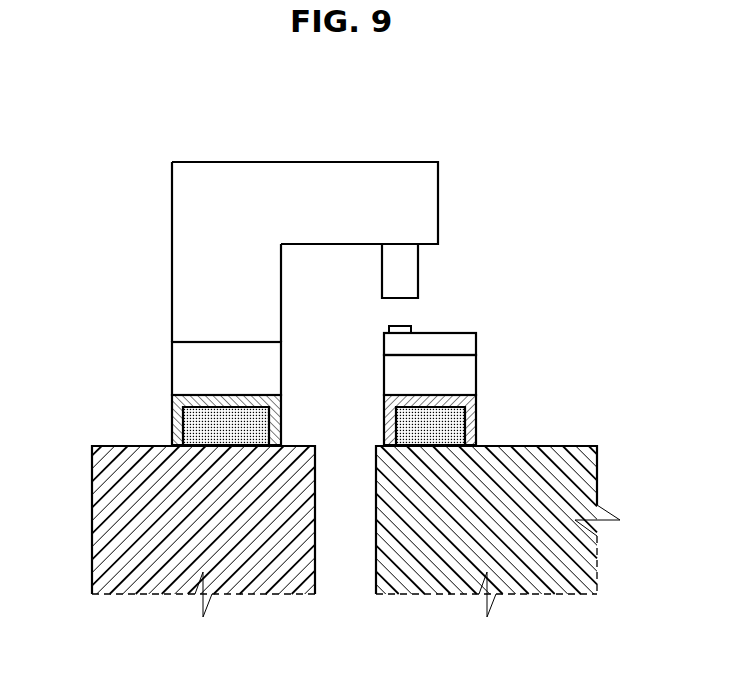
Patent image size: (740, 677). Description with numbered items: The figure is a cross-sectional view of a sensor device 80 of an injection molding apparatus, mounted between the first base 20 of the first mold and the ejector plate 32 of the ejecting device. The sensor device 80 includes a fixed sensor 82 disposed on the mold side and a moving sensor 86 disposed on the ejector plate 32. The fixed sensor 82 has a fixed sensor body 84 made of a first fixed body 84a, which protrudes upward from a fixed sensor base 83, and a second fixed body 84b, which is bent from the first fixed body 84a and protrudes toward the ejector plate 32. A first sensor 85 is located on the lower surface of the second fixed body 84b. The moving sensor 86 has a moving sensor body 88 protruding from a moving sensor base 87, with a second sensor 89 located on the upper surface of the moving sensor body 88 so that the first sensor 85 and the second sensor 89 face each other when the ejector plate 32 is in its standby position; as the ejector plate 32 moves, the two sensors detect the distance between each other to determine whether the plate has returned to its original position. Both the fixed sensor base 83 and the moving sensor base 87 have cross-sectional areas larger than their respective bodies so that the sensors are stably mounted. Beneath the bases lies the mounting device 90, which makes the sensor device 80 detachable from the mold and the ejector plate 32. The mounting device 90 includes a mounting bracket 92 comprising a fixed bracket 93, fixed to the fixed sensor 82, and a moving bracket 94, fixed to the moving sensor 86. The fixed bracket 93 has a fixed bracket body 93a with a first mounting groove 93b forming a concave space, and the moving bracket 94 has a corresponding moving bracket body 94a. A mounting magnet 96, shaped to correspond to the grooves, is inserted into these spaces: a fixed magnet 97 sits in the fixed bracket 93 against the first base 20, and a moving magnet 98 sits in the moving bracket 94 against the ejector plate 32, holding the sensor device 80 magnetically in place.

The sensor device 80 is at (142, 136).
The fixed sensor 82 is at (164, 199).
The fixed sensor body 84 is at (301, 252).
The first fixed body 84a is at (192, 272).
The second fixed body 84b is at (413, 188).
The first sensor 85 is at (413, 262).
The fixed sensor base 83 is at (188, 358).
The moving sensor 86 is at (487, 343).
The moving sensor base 87 is at (470, 368).
The moving sensor body 88 is at (447, 342).
The second sensor 89 is at (393, 326).
The mounting device 90 is at (164, 402).
The mounting bracket 92 is at (409, 407).
The fixed bracket 93 is at (274, 410).
The fixed bracket body 93a is at (274, 430).
The first mounting groove 93b is at (248, 408).
The moving bracket 94 is at (477, 412).
The moving bracket body 94a is at (478, 438).
The mounting magnet 96 is at (267, 465).
The fixed magnet 97 is at (184, 426).
The moving magnet 98 is at (407, 438).
The first base 20 is at (98, 508).
The ejector plate 32 is at (584, 473).